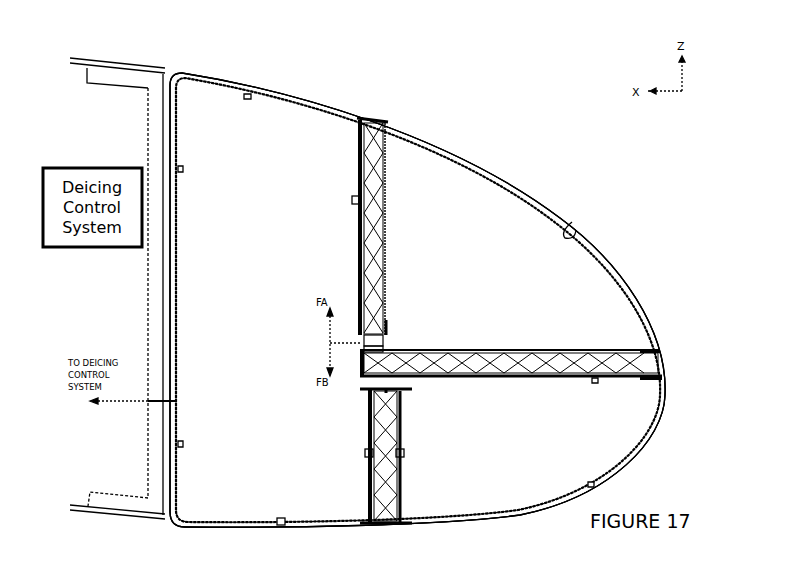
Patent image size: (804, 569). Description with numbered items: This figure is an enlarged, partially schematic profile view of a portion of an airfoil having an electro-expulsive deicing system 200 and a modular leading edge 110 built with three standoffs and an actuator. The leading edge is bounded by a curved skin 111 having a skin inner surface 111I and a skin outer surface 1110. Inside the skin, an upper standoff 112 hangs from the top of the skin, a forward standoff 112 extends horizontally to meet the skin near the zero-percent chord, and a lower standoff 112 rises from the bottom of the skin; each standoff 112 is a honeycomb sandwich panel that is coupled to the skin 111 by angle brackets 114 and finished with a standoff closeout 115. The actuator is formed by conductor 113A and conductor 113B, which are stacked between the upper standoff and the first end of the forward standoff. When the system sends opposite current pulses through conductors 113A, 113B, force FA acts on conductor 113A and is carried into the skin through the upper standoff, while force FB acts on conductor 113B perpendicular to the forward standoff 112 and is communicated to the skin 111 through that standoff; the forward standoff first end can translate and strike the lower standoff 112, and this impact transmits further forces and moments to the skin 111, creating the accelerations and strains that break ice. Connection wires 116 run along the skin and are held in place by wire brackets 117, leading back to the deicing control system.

The deicing system 200 is at (157, 64).
The modular leading edge 110 is at (570, 185).
The skin 111 is at (636, 290).
The skin outer surface 1110 is at (612, 266).
The skin inner surface 111I is at (572, 222).
The standoff 112 is at (378, 214).
The conductor 113A is at (384, 340).
The conductor 113B is at (384, 345).
The angle bracket 114 is at (356, 121).
The standoff closeout 115 is at (387, 320).
The connection wires 116 is at (300, 104).
The wire bracket 117 is at (355, 199).